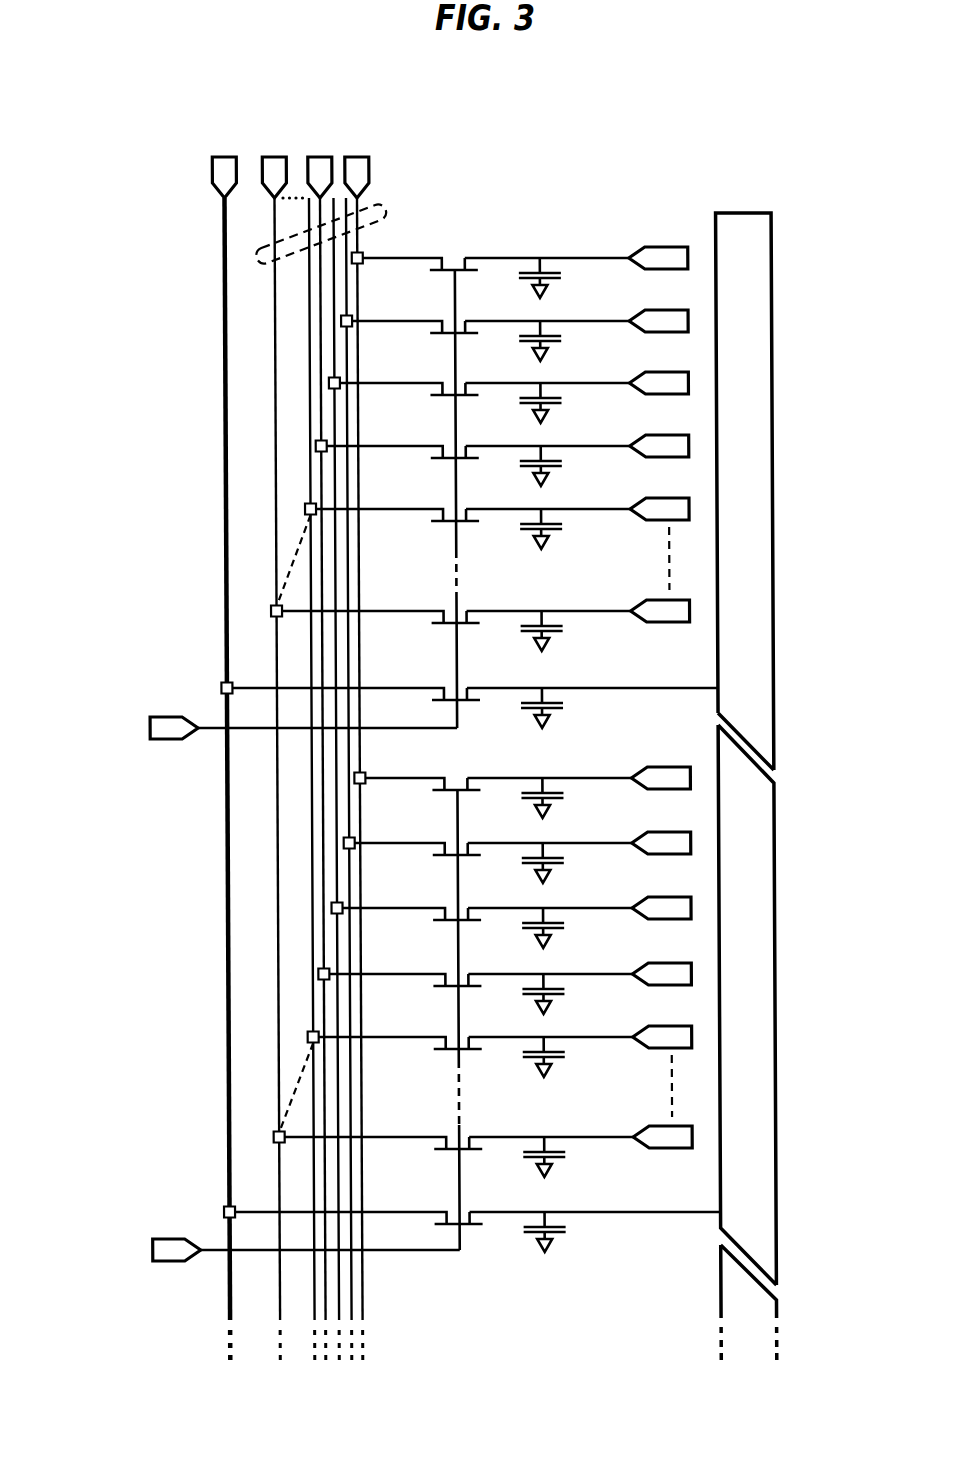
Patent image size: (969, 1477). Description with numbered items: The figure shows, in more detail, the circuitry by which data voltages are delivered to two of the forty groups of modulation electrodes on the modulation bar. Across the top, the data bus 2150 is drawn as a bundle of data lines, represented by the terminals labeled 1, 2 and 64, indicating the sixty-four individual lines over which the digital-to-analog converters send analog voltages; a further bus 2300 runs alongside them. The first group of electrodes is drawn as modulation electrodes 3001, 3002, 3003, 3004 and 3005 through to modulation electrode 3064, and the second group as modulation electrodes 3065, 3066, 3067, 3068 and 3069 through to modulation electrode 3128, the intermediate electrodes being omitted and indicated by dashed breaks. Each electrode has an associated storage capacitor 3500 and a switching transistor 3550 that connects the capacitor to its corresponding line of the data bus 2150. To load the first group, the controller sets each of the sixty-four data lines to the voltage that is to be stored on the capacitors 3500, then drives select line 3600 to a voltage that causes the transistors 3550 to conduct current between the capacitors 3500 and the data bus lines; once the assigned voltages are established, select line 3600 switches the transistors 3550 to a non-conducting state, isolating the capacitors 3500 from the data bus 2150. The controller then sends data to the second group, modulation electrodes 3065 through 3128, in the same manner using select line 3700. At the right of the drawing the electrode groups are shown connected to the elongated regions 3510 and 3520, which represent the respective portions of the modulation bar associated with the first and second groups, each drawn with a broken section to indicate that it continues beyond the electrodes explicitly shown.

The common bus line 2300 is at (226, 232).
The signal line 64 terminal 64 is at (278, 741).
The signal line 2 terminal 2 is at (323, 741).
The signal line 1 terminal 1 is at (360, 741).
The data bus 2150 is at (424, 199).
The transistor 3550 is at (441, 272).
The capacitor 3500 is at (518, 267).
The modulation electrode 3001 is at (652, 247).
The modulation electrode 3002 is at (652, 310).
The modulation electrode 3003 is at (652, 372).
The modulation electrode 3004 is at (652, 435).
The modulation electrode 3005 is at (652, 498).
The modulation electrode 3064 is at (652, 600).
The modulation electrode 3065 is at (652, 767).
The modulation electrode 3066 is at (652, 832).
The modulation electrode 3067 is at (652, 897).
The modulation electrode 3068 is at (652, 963).
The modulation electrode 3069 is at (652, 1026).
The modulation electrode 3128 is at (652, 1126).
The first electrode block 3510 is at (776, 400).
The second electrode block 3520 is at (776, 898).
The select line 3600 is at (206, 742).
The select line 3700 is at (206, 1264).